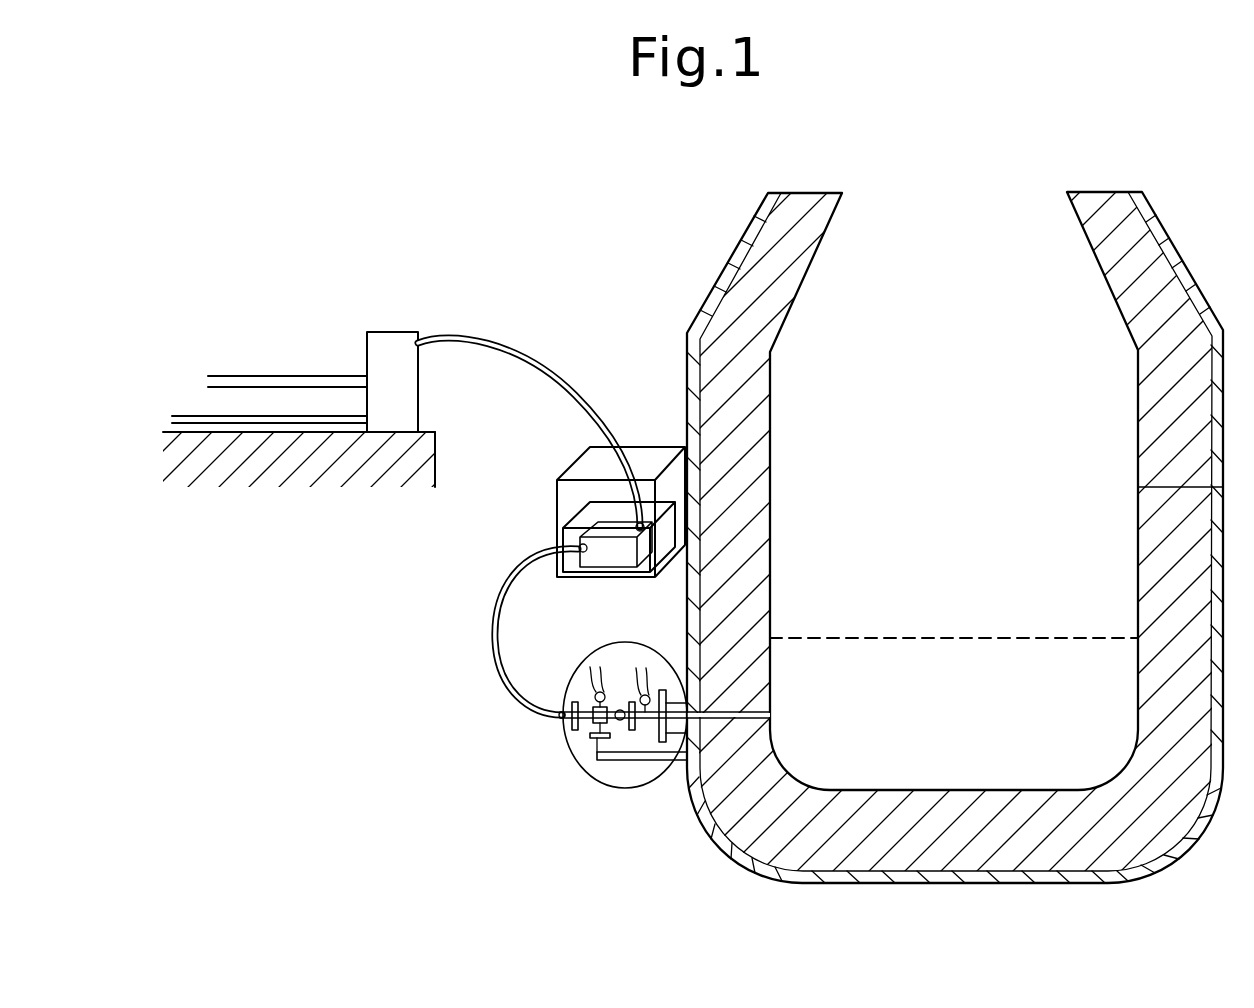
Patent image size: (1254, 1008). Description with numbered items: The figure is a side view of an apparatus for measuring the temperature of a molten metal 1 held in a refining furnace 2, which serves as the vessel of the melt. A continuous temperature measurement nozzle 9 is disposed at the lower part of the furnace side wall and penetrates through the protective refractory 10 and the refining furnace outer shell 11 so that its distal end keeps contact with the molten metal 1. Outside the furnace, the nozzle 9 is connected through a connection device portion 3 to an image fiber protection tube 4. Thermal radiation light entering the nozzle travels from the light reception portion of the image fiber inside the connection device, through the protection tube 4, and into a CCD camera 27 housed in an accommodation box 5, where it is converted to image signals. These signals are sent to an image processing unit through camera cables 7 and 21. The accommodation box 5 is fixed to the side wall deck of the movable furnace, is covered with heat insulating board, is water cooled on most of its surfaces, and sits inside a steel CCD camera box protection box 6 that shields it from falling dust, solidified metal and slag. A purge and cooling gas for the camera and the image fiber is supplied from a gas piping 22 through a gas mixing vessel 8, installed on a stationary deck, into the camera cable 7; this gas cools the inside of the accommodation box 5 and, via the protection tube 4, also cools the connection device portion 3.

The molten metal 1 is at (908, 656).
The refining furnace 2 is at (1190, 186).
The connection device portion 3 is at (572, 765).
The image fiber protection tube 4 is at (490, 646).
The accommodation box 5 is at (583, 518).
The CCD camera box protection box 6 is at (583, 468).
The camera cable 7 is at (500, 333).
The gas mixing vessel 8 is at (383, 350).
The continuous temperature measurement nozzle 9 is at (718, 722).
The protective refractory 10 is at (750, 567).
The refining furnace outer shell 11 is at (690, 425).
The camera cable 21 is at (277, 375).
The gas piping 22 is at (186, 415).
The CCD camera 27 is at (603, 553).